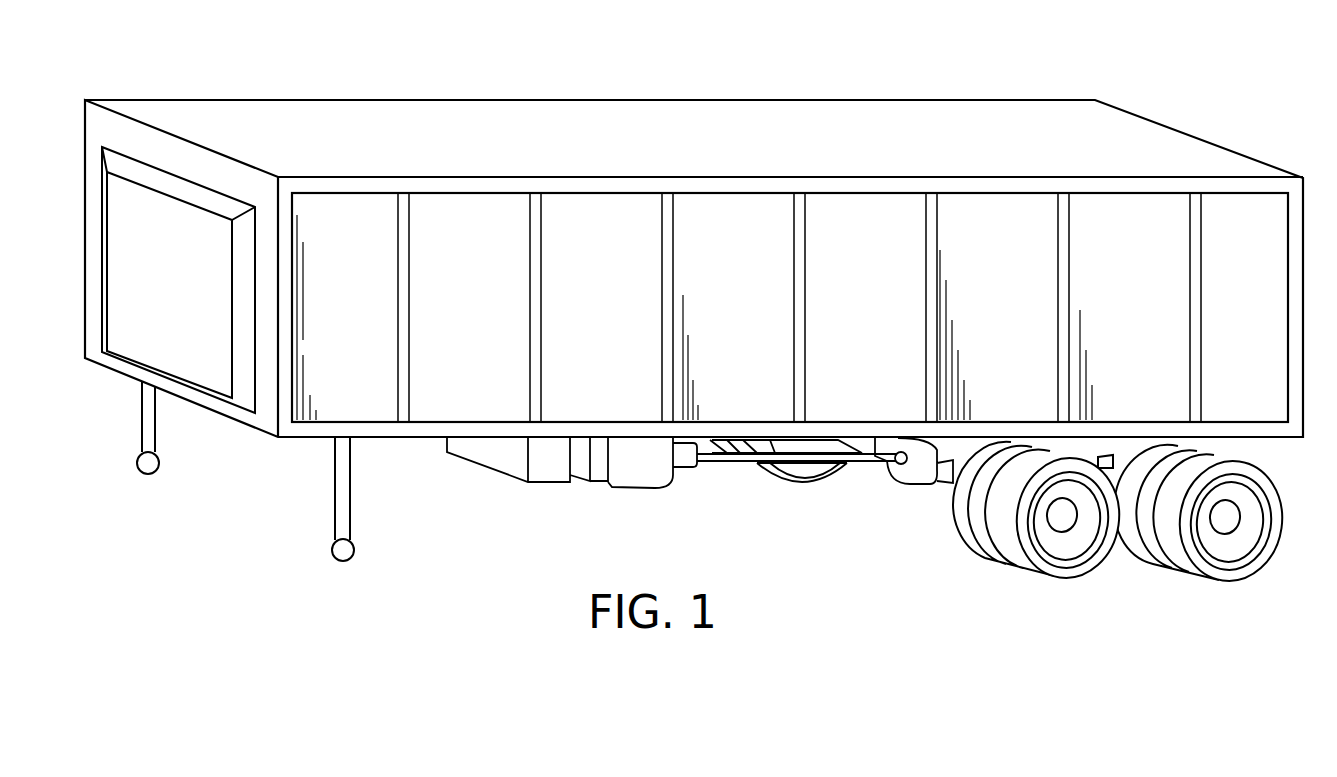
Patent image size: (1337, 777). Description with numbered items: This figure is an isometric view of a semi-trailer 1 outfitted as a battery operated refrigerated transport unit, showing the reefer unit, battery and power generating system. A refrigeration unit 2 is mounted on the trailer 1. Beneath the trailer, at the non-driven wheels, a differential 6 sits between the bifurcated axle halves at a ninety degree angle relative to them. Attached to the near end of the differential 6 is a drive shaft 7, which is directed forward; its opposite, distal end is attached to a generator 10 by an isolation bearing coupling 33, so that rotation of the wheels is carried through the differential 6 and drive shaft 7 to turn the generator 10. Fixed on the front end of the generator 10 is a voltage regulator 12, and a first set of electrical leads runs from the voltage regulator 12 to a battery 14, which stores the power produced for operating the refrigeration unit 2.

The semi-trailer 1 is at (1030, 132).
The refrigeration unit 2 is at (157, 253).
The differential 6 is at (918, 467).
The drive shaft 7 is at (723, 460).
The generator 10 is at (633, 478).
The voltage regulator 12 is at (602, 455).
The battery 14 is at (543, 472).
The isolation bearing coupling 33 is at (683, 463).